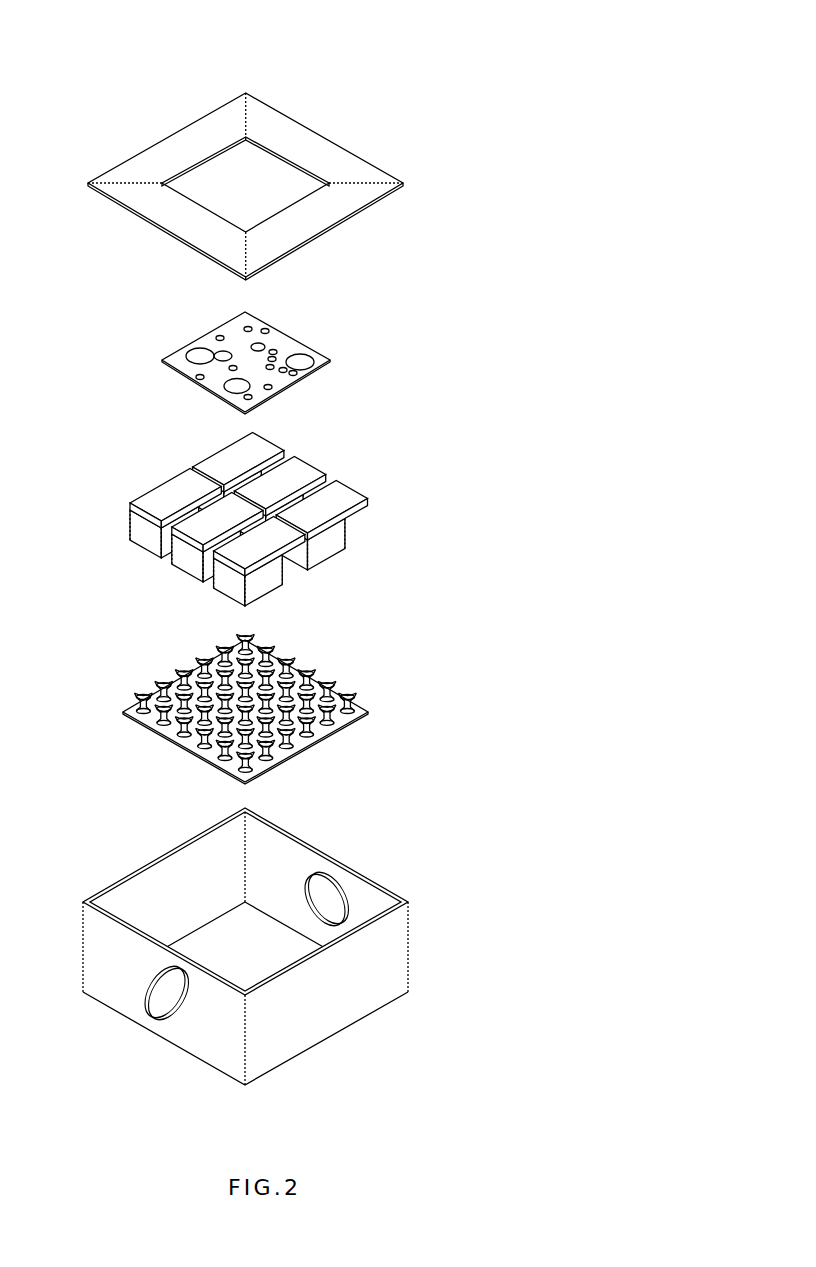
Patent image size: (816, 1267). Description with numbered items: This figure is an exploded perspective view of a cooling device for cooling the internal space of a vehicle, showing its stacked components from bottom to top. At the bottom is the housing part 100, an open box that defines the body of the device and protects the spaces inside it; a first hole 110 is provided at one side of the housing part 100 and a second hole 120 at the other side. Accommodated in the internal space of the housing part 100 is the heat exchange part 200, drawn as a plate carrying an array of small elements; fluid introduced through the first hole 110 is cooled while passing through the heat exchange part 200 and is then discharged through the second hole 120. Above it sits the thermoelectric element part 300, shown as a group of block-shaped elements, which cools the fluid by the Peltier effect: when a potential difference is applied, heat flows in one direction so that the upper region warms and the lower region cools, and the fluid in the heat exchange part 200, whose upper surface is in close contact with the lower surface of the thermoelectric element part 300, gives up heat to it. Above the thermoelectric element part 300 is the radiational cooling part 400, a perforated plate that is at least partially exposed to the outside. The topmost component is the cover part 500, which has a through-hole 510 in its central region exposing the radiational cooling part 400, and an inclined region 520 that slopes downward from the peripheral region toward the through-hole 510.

The cover part 500 is at (315, 68).
The through-hole 510 is at (229, 197).
The inclined region 520 is at (318, 153).
The radiational cooling part 400 is at (283, 347).
The thermoelectric element part 300 is at (332, 505).
The heat exchange part 200 is at (318, 678).
The housing part 100 is at (333, 1010).
The first hole 110 is at (324, 900).
The second hole 120 is at (163, 987).